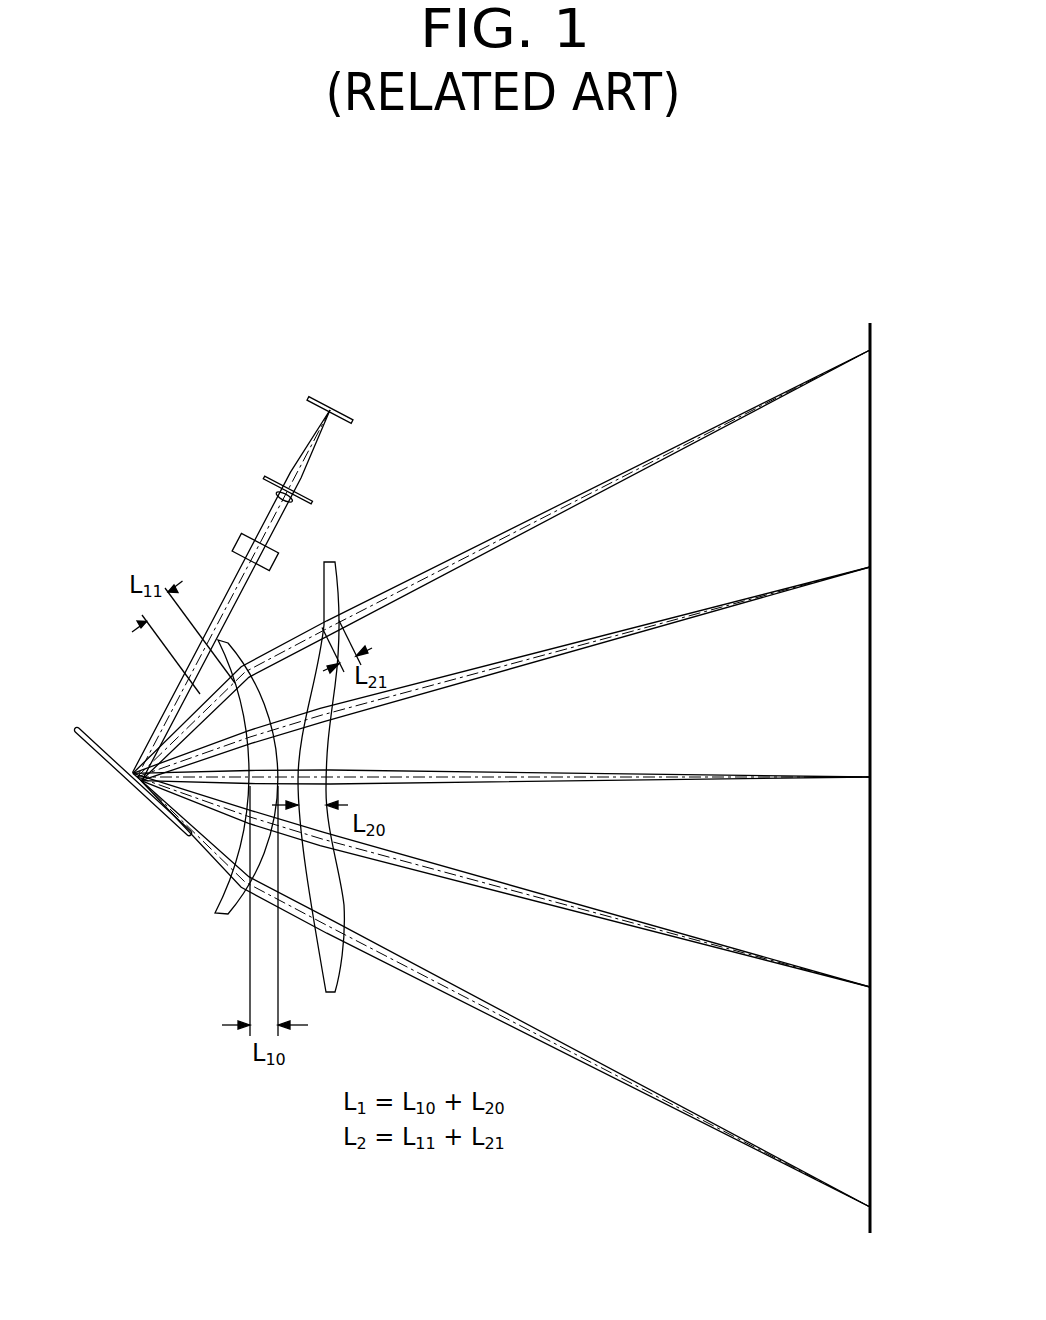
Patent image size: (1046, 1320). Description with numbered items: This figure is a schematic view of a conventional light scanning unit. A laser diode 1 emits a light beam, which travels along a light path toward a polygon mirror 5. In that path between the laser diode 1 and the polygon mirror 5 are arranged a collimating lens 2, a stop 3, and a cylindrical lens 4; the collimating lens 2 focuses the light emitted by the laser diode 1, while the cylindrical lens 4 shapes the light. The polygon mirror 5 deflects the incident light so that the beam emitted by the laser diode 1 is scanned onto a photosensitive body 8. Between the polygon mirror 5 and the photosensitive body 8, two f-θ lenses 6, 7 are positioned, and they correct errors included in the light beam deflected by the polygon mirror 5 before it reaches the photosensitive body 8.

The laser diode 1 is at (315, 402).
The collimating lens 2 is at (274, 495).
The stop 3 is at (268, 480).
The cylindrical lens 4 is at (244, 549).
The polygon mirror 5 is at (93, 752).
The f-θ lens 6 is at (221, 917).
The f-θ lens 7 is at (338, 983).
The photosensitive body 8 is at (873, 333).